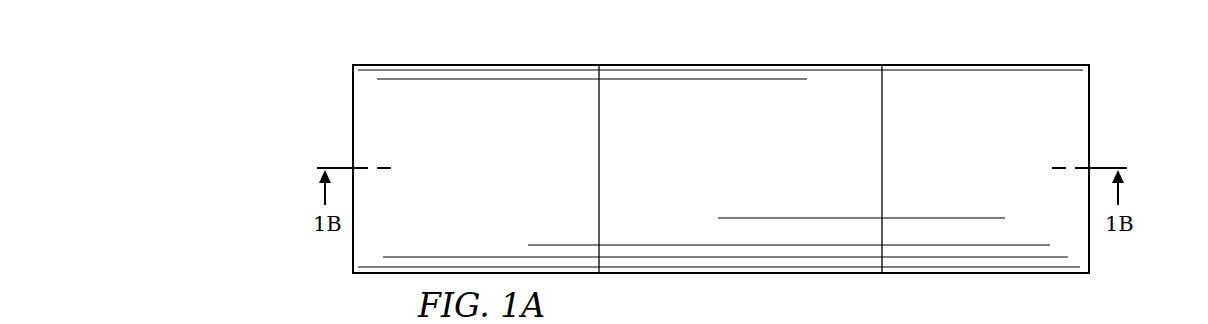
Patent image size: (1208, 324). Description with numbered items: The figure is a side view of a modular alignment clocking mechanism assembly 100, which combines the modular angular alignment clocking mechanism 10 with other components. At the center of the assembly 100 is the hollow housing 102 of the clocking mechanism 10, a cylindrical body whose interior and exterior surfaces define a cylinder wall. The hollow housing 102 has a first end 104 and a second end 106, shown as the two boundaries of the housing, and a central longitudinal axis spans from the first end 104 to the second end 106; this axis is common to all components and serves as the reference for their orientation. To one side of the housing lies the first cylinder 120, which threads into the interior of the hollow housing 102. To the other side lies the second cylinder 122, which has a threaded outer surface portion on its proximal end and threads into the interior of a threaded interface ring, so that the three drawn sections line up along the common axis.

The modular alignment clocking mechanism assembly 100 is at (1070, 47).
The hollow housing 102 is at (724, 131).
The first end 104 is at (872, 66).
The second end 106 is at (609, 66).
The first cylinder 120 is at (460, 131).
The second cylinder 122 is at (970, 131).
The modular angular alignment clocking mechanism 10 is at (739, 318).